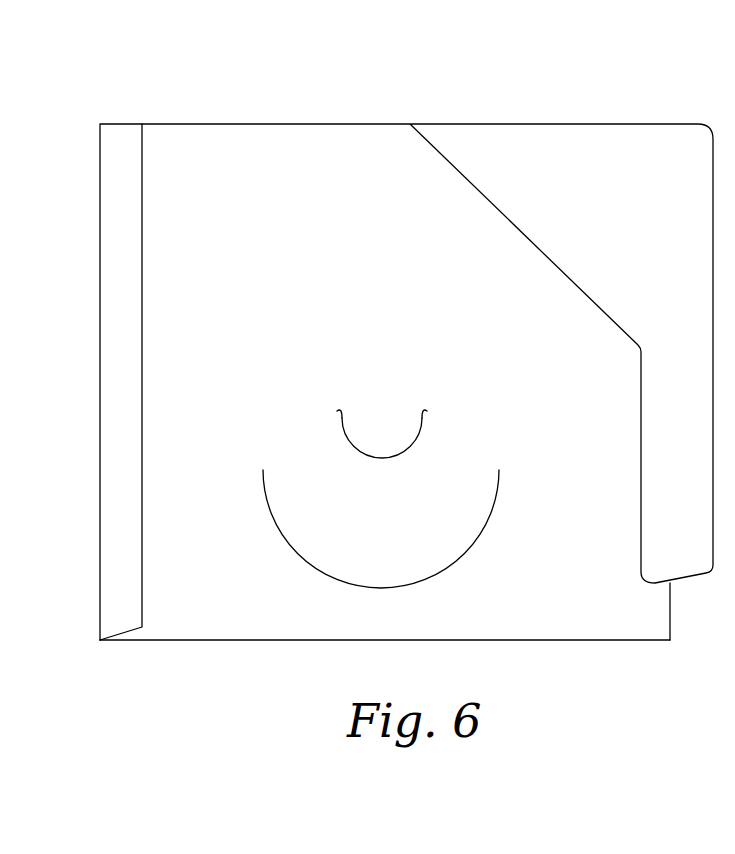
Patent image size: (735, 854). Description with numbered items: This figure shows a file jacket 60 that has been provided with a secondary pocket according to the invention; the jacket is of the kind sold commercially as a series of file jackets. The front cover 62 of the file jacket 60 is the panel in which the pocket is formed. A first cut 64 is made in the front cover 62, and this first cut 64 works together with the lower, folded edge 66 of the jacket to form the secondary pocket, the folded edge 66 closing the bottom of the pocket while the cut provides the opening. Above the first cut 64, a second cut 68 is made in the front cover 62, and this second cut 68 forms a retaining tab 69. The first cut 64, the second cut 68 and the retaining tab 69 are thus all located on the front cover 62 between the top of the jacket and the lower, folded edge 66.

The file jacket 60 is at (416, 84).
The front cover 62 is at (175, 157).
The first cut 64 is at (457, 538).
The lower, folded edge 66 is at (532, 641).
The second cut 68 is at (413, 438).
The retaining tab 69 is at (368, 428).